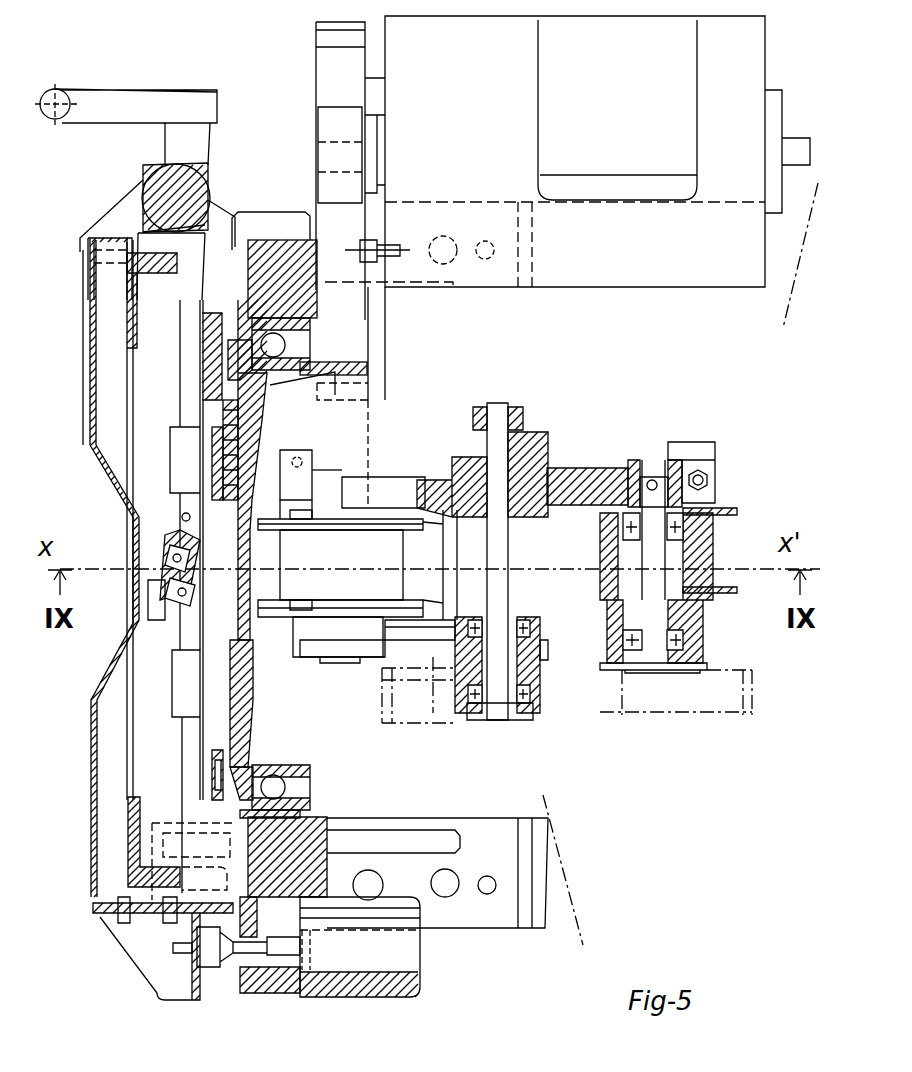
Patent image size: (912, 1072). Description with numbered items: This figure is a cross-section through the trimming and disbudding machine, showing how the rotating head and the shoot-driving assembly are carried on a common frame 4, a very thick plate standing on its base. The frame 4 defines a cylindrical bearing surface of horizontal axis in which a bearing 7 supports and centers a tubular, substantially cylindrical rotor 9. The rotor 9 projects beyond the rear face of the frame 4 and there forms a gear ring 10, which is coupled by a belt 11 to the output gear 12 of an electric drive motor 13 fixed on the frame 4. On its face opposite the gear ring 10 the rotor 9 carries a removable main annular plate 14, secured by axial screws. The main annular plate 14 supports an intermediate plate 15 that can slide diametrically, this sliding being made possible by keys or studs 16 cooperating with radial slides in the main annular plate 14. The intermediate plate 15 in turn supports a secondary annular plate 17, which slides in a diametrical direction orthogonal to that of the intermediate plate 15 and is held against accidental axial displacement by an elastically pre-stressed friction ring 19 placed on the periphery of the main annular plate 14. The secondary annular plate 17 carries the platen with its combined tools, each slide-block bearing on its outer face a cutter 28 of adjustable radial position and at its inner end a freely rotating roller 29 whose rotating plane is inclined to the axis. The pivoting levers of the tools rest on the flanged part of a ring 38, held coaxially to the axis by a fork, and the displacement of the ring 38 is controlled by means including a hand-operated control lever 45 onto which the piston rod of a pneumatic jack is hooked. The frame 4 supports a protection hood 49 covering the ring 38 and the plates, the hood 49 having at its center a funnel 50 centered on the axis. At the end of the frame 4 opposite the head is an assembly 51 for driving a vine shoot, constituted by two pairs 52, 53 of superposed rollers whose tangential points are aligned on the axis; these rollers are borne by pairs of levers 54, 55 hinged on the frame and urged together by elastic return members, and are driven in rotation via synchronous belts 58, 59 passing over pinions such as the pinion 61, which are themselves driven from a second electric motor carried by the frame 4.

The hand-operated control lever 45 is at (122, 102).
The frame 4 is at (275, 250).
The output gear 12 is at (343, 127).
The belt 11 is at (370, 158).
The electric drive motor 13 is at (736, 96).
The ring 38 is at (92, 292).
The main annular plate 14 is at (200, 352).
The elastically pre-stressed friction ring 19 is at (203, 374).
The secondary annular plate 17 is at (215, 418).
The intermediate plate 15 is at (175, 455).
The roller 29 is at (168, 548).
The cutter 28 is at (152, 592).
The bearing 7 is at (300, 332).
The gear ring 10 is at (370, 370).
The rotor 9 is at (280, 380).
The pair of levers 54 is at (392, 490).
The pair of levers 55 is at (575, 470).
The keys or studs 16 is at (258, 556).
The funnel 50 is at (112, 668).
The protection hood 49 is at (92, 784).
The pair of rollers 52 is at (397, 645).
The synchronous belt 58 is at (413, 633).
The pinion 61 is at (530, 680).
The synchronous belt 59 is at (578, 655).
The assembly for driving a vine shoot 51 is at (717, 668).
The pair of rollers 53 is at (722, 608).